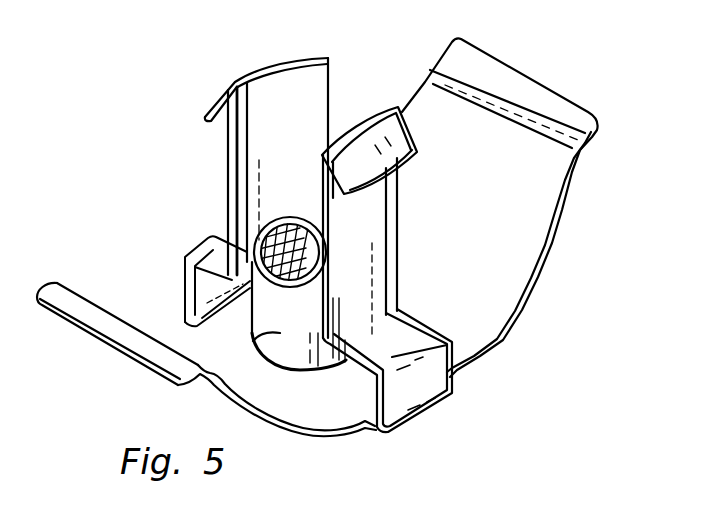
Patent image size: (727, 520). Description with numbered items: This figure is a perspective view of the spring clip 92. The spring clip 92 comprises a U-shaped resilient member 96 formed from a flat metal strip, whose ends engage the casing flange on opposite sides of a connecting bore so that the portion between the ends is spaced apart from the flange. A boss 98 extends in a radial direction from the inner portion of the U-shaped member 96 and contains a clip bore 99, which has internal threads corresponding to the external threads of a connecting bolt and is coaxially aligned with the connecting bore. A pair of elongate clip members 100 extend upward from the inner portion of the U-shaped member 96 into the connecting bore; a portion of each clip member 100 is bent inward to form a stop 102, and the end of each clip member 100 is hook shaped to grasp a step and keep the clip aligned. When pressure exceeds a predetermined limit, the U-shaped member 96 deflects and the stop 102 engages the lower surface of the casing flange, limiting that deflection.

The spring clip 92 is at (570, 230).
The U-shaped resilient member 96 is at (510, 188).
The boss 98 is at (268, 338).
The clip bore 99 is at (267, 238).
The clip member 100 is at (258, 118).
The stop 102 is at (382, 328).